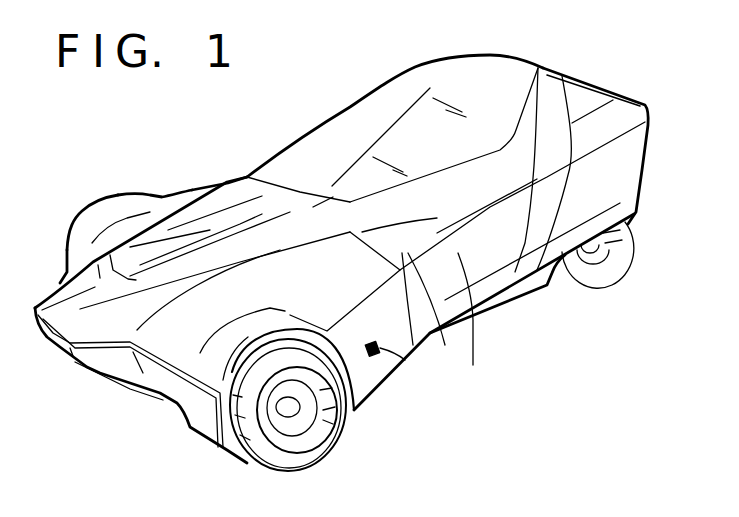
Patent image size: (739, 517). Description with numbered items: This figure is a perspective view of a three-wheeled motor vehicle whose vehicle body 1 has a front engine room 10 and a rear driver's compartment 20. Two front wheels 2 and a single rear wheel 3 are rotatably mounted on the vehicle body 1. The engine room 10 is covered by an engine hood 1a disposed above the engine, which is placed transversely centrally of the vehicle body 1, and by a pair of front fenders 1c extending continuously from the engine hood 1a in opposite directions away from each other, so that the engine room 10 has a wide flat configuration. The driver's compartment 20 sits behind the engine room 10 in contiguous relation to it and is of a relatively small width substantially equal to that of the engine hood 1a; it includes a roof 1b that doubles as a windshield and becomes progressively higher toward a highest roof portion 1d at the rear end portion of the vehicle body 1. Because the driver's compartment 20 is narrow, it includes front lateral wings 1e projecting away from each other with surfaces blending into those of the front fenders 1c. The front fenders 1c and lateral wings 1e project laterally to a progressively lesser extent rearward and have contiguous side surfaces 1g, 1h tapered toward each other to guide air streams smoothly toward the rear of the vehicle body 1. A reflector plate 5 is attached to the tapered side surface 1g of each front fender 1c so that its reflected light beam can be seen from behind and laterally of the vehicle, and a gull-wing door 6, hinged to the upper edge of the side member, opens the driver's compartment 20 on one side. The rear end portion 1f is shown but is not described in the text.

The vehicle body 1 is at (292, 118).
The engine hood 1a is at (153, 250).
The roof 1b is at (348, 128).
The front fender 1c is at (95, 222).
The highest roof portion 1d is at (468, 68).
The front lateral wing 1e is at (177, 215).
The rear spoiler end 1f is at (651, 126).
The tapered side surface 1g is at (380, 371).
The tapered side surface 1h is at (473, 365).
The front wheel 2 is at (310, 457).
The rear wheel 3 is at (603, 275).
The reflector plate 5 is at (405, 360).
The gull-wing door 6 is at (477, 303).
The engine room 10 is at (163, 188).
The driver's compartment 20 is at (373, 106).